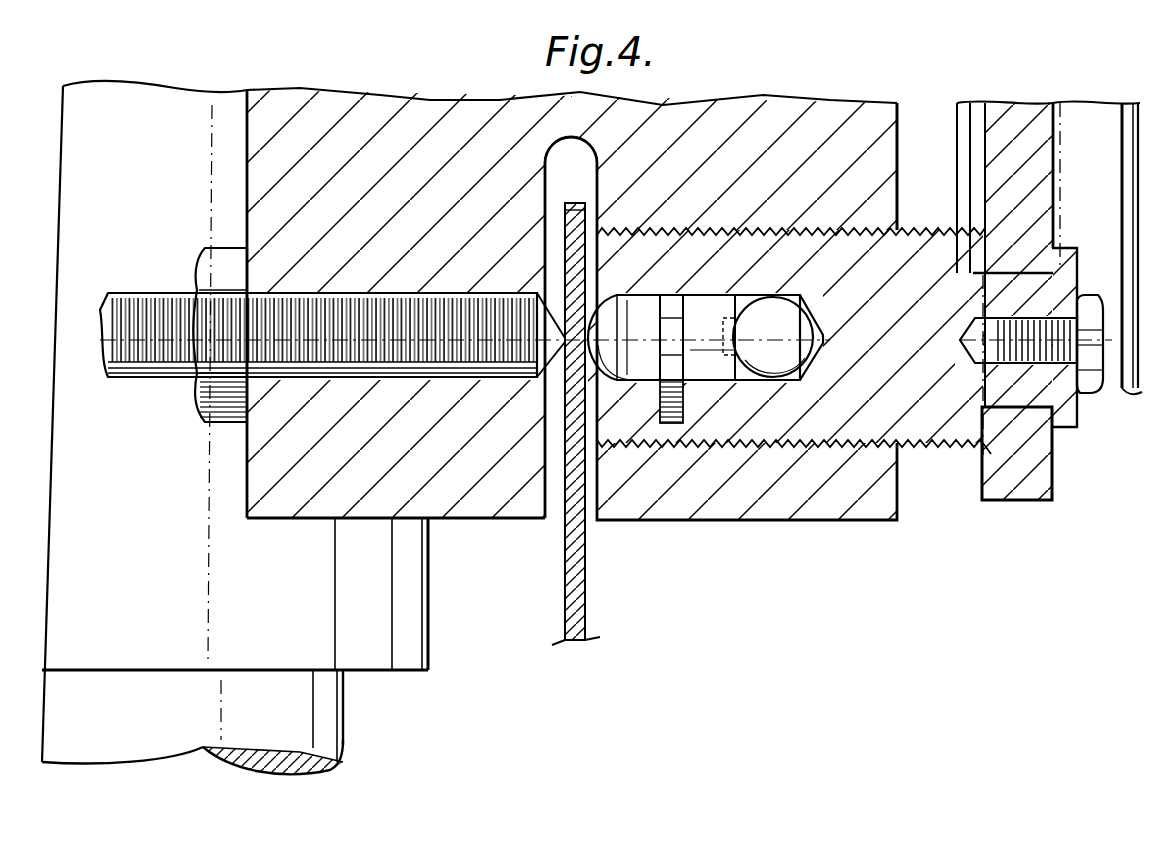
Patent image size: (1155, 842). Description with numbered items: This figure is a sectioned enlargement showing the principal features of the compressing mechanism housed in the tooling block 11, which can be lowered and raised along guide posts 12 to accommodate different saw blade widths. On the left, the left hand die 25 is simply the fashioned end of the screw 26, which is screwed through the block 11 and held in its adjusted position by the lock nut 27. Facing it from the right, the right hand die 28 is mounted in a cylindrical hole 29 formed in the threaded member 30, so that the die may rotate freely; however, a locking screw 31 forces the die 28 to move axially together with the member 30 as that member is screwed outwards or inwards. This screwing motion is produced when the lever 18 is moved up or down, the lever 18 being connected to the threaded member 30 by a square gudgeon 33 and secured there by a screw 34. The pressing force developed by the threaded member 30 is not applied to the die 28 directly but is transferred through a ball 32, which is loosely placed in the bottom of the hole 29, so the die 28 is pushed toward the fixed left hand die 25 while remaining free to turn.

The tooling block 11 is at (872, 118).
The guide posts 12 is at (328, 728).
The lever 18 is at (1030, 487).
The left hand die 25 is at (545, 375).
The screw 26 is at (350, 357).
The lock nut 27 is at (215, 422).
The right hand die 28 is at (600, 387).
The cylindrical hole 29 is at (745, 385).
The threaded member 30 is at (925, 410).
The locking screw 31 is at (685, 425).
The ball 32 is at (818, 378).
The square gudgeon 33 is at (1050, 402).
The screw 34 is at (1122, 388).